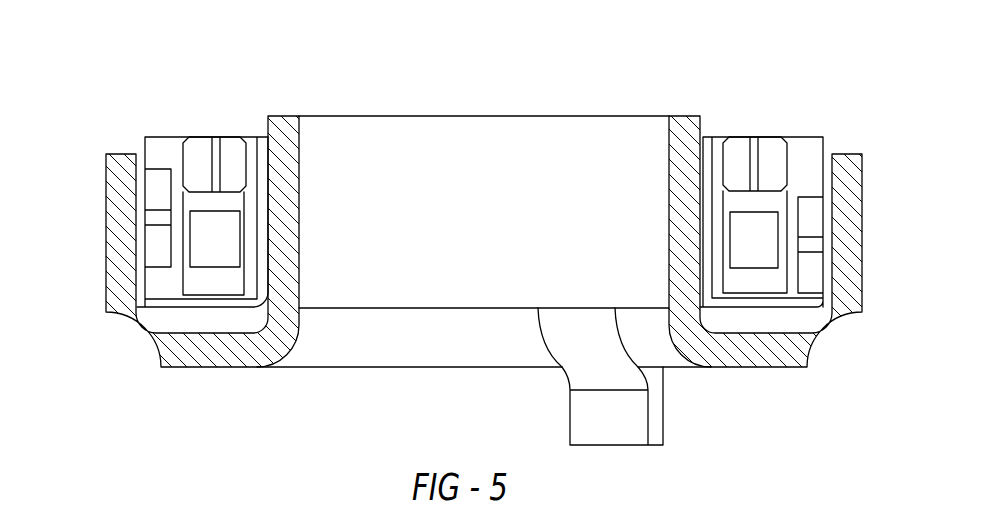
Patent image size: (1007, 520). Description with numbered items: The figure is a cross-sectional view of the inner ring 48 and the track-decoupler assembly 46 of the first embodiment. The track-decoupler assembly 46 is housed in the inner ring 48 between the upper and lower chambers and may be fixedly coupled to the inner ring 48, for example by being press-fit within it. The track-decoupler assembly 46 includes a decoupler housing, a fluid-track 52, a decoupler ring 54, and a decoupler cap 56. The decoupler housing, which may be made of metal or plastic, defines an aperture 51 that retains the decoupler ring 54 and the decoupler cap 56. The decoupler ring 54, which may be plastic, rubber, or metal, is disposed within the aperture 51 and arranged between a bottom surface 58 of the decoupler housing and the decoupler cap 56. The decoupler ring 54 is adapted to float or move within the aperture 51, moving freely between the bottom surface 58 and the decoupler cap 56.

The track-decoupler assembly 46 is at (740, 77).
The inner ring 48 is at (843, 351).
The aperture 51 is at (780, 280).
The fluid-track 52 is at (820, 213).
The decoupler ring 54 is at (213, 267).
The decoupler cap 56 is at (767, 137).
The bottom surface 58 is at (232, 288).